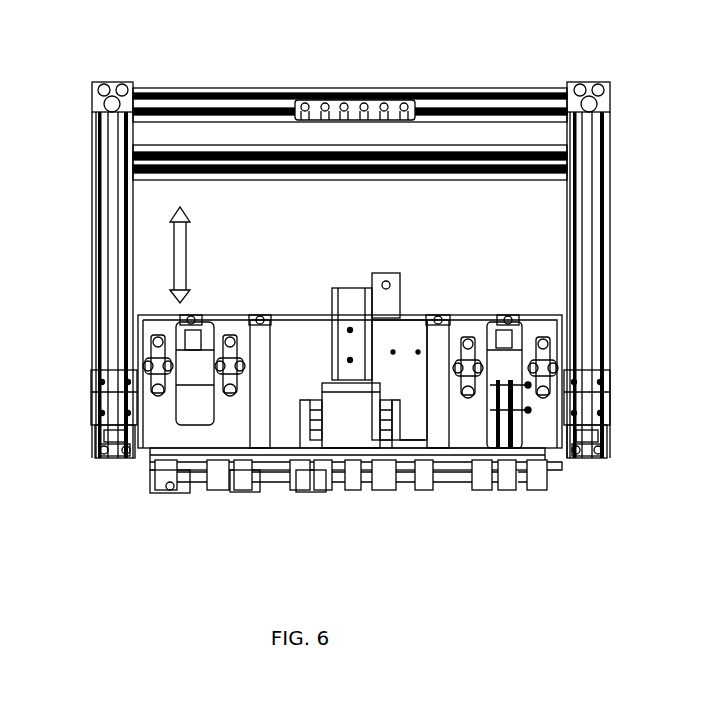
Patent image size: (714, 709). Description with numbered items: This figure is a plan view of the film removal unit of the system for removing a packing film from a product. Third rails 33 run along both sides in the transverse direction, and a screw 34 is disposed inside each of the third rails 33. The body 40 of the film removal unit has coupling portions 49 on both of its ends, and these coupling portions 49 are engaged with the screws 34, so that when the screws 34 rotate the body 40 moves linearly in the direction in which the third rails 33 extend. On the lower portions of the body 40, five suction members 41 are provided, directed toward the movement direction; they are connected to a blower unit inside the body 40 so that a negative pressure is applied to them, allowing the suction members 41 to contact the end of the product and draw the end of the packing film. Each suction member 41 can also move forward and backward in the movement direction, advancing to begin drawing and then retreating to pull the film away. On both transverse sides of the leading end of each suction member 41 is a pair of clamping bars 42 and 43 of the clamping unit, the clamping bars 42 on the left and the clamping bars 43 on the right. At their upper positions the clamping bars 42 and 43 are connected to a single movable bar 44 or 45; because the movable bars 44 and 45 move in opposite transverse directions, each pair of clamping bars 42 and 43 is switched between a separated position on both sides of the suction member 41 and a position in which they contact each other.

The third rail 33 is at (83, 200).
The screw 34 is at (112, 251).
The body 40 is at (282, 248).
The suction member 41 is at (268, 497).
The clamping bar 42 is at (237, 498).
The clamping bar 43 is at (308, 498).
The movable bar 44 is at (177, 495).
The movable bar 45 is at (401, 458).
The coupling portion 49 is at (112, 399).